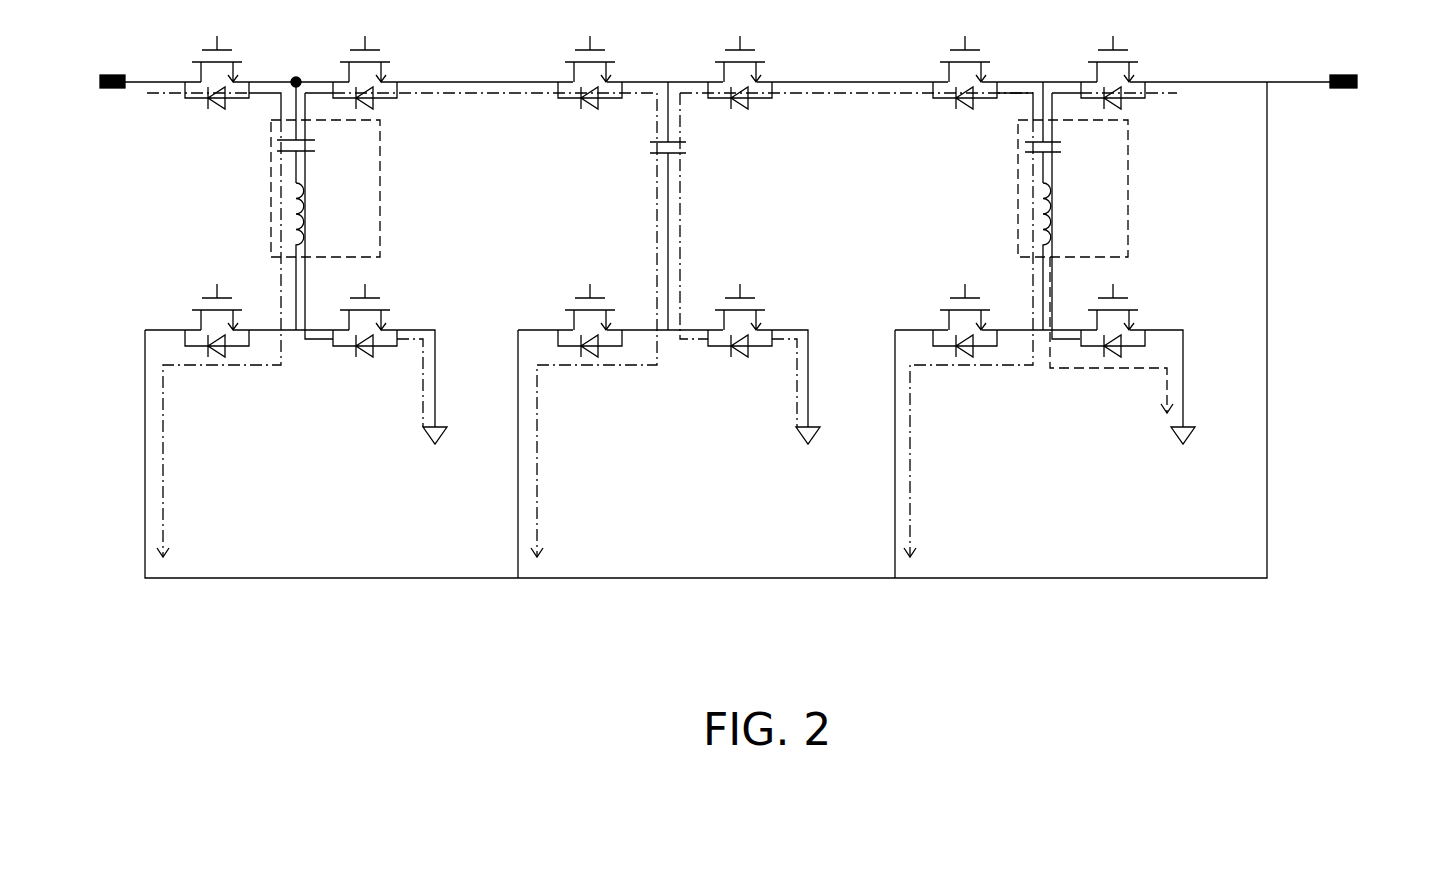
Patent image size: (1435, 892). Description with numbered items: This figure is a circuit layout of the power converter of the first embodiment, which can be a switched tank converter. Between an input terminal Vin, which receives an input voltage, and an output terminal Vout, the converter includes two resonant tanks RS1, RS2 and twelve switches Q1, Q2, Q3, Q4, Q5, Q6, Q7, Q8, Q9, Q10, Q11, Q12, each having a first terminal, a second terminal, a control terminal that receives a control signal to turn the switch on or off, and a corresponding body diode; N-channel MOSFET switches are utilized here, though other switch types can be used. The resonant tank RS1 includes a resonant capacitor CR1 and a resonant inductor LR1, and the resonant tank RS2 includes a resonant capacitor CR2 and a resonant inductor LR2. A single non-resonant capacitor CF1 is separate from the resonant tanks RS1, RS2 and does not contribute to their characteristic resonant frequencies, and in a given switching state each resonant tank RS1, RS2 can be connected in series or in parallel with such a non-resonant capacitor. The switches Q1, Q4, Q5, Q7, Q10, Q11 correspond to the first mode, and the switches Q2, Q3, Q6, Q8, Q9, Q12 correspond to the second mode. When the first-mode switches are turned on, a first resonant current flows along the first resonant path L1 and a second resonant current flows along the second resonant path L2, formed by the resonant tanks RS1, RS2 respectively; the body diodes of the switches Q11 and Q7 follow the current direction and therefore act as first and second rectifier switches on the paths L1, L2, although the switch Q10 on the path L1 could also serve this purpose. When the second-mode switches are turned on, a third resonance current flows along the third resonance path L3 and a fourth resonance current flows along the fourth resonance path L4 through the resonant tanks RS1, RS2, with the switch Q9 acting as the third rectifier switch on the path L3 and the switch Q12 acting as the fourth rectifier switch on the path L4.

The switch Q1 is at (229, 58).
The switch Q2 is at (377, 58).
The switch Q3 is at (602, 58).
The switch Q4 is at (752, 58).
The switch Q5 is at (977, 58).
The switch Q6 is at (1125, 58).
The switch Q7 is at (229, 306).
The switch Q8 is at (374, 313).
The switch Q9 is at (602, 306).
The switch Q10 is at (758, 305).
The switch Q11 is at (983, 306).
The switch Q12 is at (1129, 313).
The resonant capacitor CR1 is at (321, 132).
The resonant inductor LR1 is at (326, 256).
The resonant tank RS1 is at (382, 180).
The non-resonant capacitor CF1 is at (694, 206).
The resonant capacitor CR2 is at (1070, 132).
The resonant inductor LR2 is at (1074, 256).
The resonant tank RS2 is at (1129, 180).
The first resonant path L1 is at (912, 491).
The second resonant path L2 is at (165, 493).
The third resonance path L3 is at (539, 462).
The fourth resonance path L4 is at (1167, 382).
The input terminal Vin is at (86, 83).
The output terminal Vout is at (1374, 83).